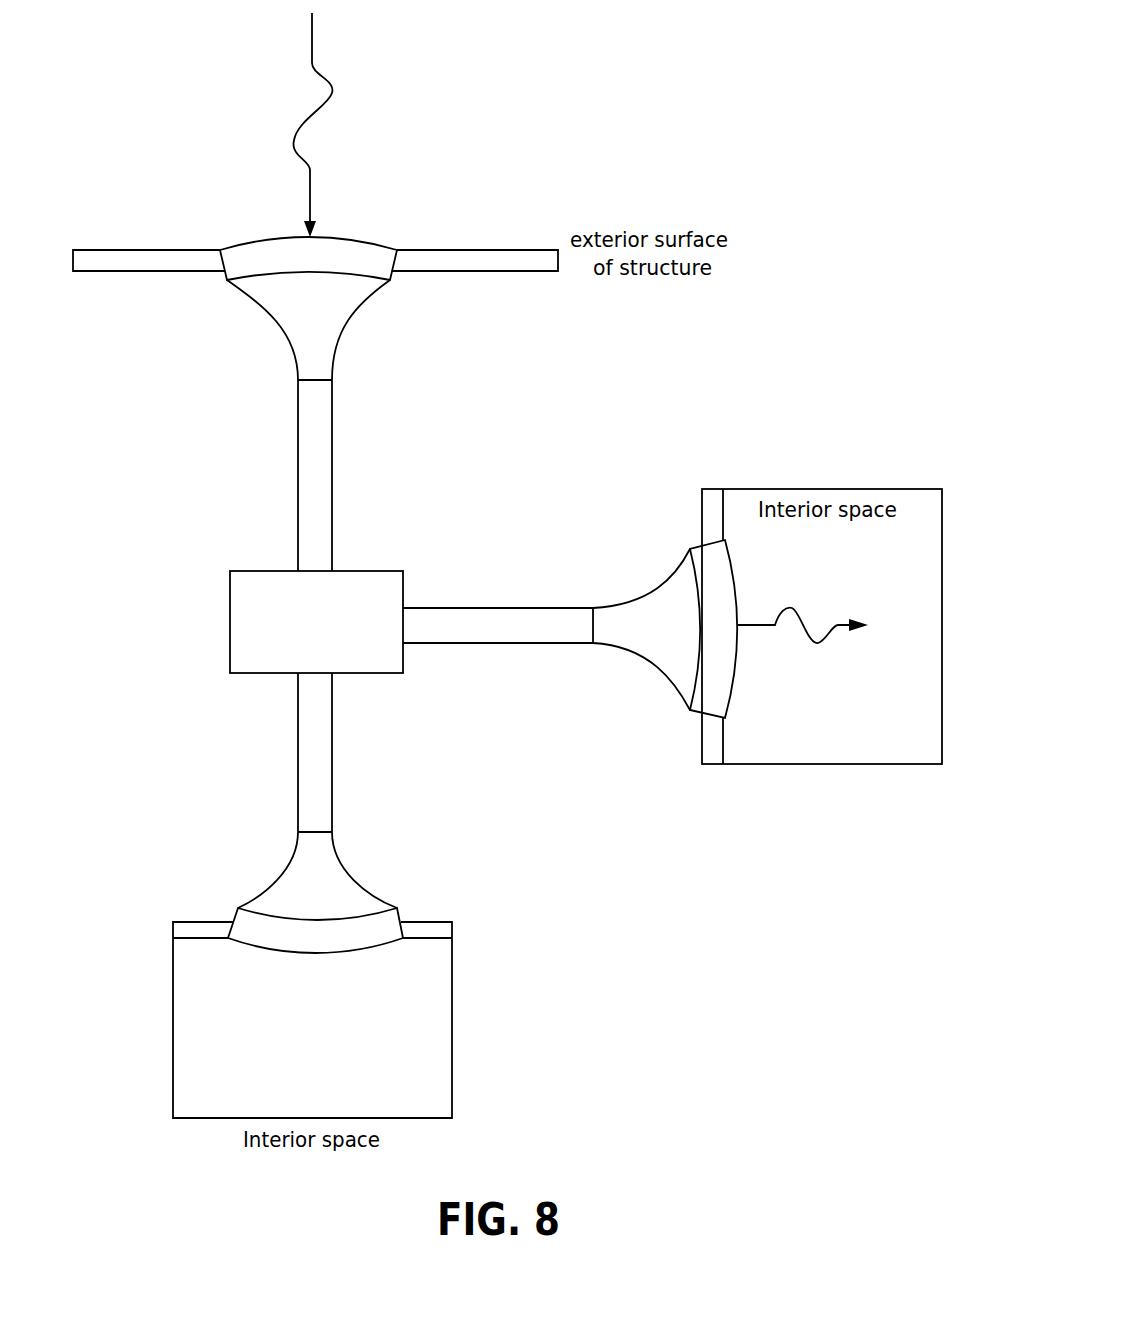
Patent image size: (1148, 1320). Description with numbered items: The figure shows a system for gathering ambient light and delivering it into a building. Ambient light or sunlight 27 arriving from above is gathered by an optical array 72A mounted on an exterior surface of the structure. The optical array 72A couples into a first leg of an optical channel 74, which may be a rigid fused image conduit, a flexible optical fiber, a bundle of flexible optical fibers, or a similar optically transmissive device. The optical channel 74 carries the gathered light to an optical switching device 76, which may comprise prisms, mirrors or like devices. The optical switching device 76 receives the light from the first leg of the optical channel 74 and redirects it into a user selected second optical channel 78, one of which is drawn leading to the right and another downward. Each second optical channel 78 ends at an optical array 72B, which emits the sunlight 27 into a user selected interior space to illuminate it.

The ambient light or sunlight 27 is at (581, 562).
The optical array 72A is at (369, 244).
The optical array 72B is at (482, 746).
The optical channel 74 is at (378, 425).
The optical switching device 76 is at (316, 622).
The second optical channel 78 is at (392, 728).